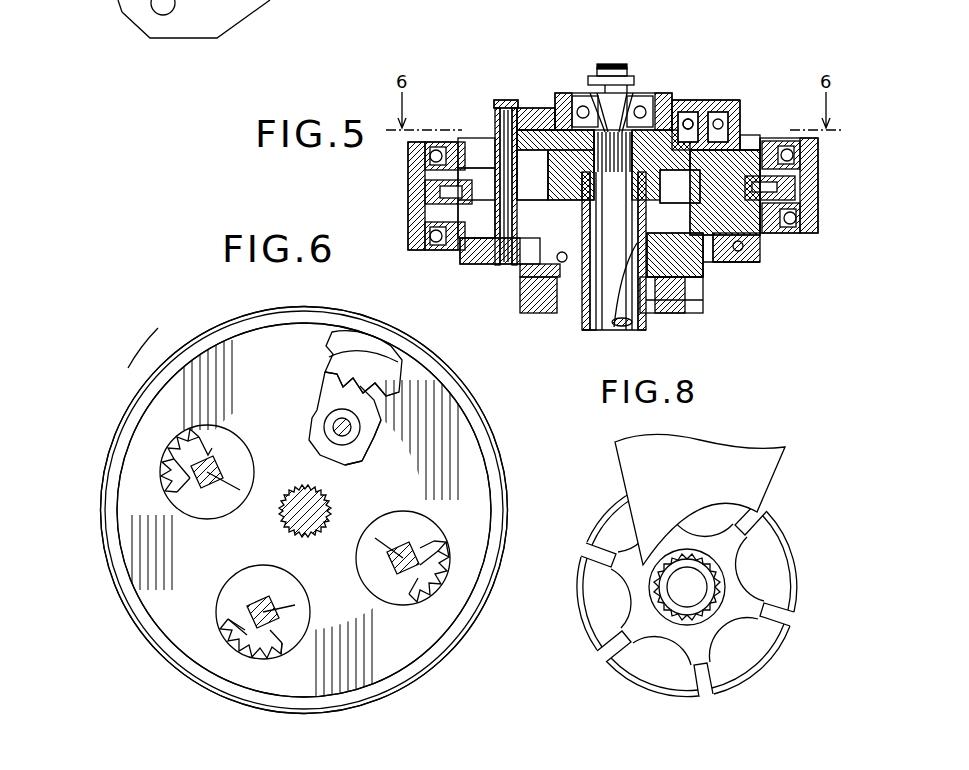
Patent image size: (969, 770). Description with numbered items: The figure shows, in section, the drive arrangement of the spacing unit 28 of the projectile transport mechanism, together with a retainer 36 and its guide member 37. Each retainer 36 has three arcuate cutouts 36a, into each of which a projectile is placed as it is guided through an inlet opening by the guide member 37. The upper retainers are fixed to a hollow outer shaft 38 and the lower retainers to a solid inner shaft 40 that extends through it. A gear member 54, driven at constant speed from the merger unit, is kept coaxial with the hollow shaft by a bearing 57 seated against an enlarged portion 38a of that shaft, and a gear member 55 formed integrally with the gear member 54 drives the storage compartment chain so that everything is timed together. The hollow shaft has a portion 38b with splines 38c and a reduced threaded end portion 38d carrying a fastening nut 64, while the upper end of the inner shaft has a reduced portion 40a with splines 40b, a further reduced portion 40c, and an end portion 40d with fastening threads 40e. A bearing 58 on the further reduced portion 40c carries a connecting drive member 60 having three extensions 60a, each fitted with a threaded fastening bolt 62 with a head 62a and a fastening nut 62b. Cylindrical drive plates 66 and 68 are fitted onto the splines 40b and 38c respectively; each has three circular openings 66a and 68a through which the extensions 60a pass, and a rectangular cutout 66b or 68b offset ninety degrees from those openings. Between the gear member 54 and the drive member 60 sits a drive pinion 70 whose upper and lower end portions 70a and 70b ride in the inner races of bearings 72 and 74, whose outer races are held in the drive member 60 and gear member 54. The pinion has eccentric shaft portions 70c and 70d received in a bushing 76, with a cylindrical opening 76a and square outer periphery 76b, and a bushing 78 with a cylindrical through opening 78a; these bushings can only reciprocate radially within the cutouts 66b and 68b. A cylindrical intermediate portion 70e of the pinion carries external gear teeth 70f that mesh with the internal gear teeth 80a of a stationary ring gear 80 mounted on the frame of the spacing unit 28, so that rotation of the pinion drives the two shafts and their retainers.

In FIG. 5, the spacing unit 28 is at (768, 38).
In FIG. 8, the retainer 36 is at (762, 545).
In FIG. 8, the arcuate cutout 36a is at (590, 550).
In FIG. 8, the guide member 37 is at (755, 445).
In FIG. 5, the hollow outer shaft 38 is at (647, 332).
In FIG. 8, the hollow outer shaft 38 is at (710, 615).
In FIG. 5, the enlarged portion of shaft 38 38a is at (650, 314).
In FIG. 5, the portion of shaft 38 38b is at (588, 333).
In FIG. 5, the splines 38c is at (620, 333).
In FIG. 5, the reduced threaded end portion 38d is at (582, 192).
In FIG. 5, the solid inner shaft 40 is at (583, 316).
In FIG. 6, the solid inner shaft 40 is at (281, 515).
In FIG. 8, the solid inner shaft 40 is at (690, 567).
In FIG. 5, the reduced portion of shaft 40 40a is at (634, 93).
In FIG. 5, the splines 40b is at (590, 93).
In FIG. 5, the further reduced portion 40c is at (627, 85).
In FIG. 5, the end portion of shaft 40 40d is at (605, 85).
In FIG. 5, the fastening threads 40e is at (612, 64).
In FIG. 5, the gear member 54 is at (720, 265).
In FIG. 6, the gear member 54 is at (240, 458).
In FIG. 5, the gear member 55 is at (703, 313).
In FIG. 5, the bearing 57 is at (522, 295).
In FIG. 5, the bearing 58 is at (588, 80).
In FIG. 5, the connecting drive member 60 is at (545, 110).
In FIG. 5, the extension 60a is at (496, 120).
In FIG. 6, the extension 60a is at (262, 598).
In FIG. 5, the threaded fastening bolt 62 is at (500, 100).
In FIG. 6, the threaded fastening bolt 62 is at (223, 472).
In FIG. 5, the bolt head 62a is at (500, 265).
In FIG. 5, the fastening nut 62b is at (512, 100).
In FIG. 5, the fastening nut 64 is at (552, 178).
In FIG. 5, the cylindrical drive plate 66 is at (545, 166).
In FIG. 6, the cylindrical drive plate 66 is at (507, 470).
In FIG. 5, the circular opening 66a is at (462, 140).
In FIG. 6, the circular opening 66a is at (233, 438).
In FIG. 5, the rectangular cutout 66b is at (770, 140).
In FIG. 6, the rectangular cutout 66b is at (445, 405).
In FIG. 5, the cylindrical drive plate 68 is at (818, 206).
In FIG. 5, the circular opening 68a is at (462, 242).
In FIG. 5, the rectangular cutout 68b is at (690, 280).
In FIG. 5, the drive pinion 70 is at (745, 160).
In FIG. 6, the drive pinion 70 is at (340, 468).
In FIG. 5, the upper end portion 70a is at (722, 100).
In FIG. 6, the upper end portion 70a is at (380, 422).
In FIG. 5, the lower end portion 70b is at (690, 270).
In FIG. 5, the eccentric shaft portion 70c is at (742, 112).
In FIG. 6, the eccentric shaft portion 70c is at (364, 464).
In FIG. 5, the eccentric shaft portion 70d is at (745, 262).
In FIG. 5, the cylindrical intermediate portion 70e is at (692, 100).
In FIG. 5, the external gear teeth 70f is at (768, 155).
In FIG. 6, the external gear teeth 70f is at (405, 352).
In FIG. 5, the bearing 72 is at (705, 105).
In FIG. 5, the bearing 74 is at (758, 265).
In FIG. 5, the bushing 76 is at (650, 96).
In FIG. 6, the bushing 76 is at (328, 415).
In FIG. 5, the cylindrical opening 76a is at (690, 125).
In FIG. 6, the cylindrical opening 76a is at (325, 424).
In FIG. 6, the outer periphery 76b is at (385, 435).
In FIG. 5, the bushing 78 is at (762, 244).
In FIG. 5, the cylindrical through opening 78a is at (770, 246).
In FIG. 5, the stationary ring gear 80 is at (818, 160).
In FIG. 6, the stationary ring gear 80 is at (385, 335).
In FIG. 5, the internal gear teeth 80a is at (426, 190).
In FIG. 6, the internal gear teeth 80a is at (185, 470).